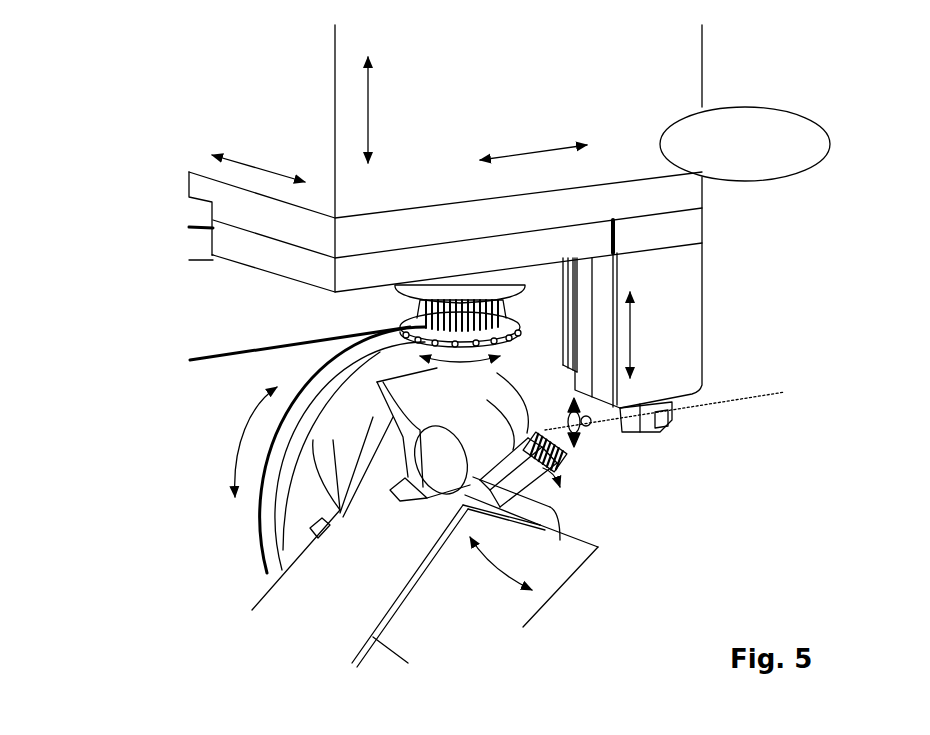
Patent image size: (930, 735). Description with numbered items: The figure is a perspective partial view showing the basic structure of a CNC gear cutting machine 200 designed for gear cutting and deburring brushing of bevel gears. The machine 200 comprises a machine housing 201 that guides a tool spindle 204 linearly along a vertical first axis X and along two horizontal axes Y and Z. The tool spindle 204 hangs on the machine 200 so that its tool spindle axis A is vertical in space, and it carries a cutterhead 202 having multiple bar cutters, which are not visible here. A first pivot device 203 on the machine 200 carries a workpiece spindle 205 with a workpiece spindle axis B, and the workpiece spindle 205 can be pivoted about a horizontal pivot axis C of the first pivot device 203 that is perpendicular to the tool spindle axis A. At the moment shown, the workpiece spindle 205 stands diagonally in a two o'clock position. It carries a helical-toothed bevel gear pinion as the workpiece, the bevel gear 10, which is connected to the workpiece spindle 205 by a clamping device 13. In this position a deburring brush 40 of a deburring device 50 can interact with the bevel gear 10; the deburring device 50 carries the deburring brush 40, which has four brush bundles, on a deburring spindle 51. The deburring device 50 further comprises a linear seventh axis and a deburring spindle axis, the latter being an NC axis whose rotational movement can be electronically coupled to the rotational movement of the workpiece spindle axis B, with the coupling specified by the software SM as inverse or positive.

The CNC gear cutting machine 200 is at (96, 56).
The machine housing 201 is at (651, 61).
The cutterhead 202 is at (415, 343).
The first pivot device 203 is at (312, 473).
The tool spindle 204 is at (525, 297).
The workpiece spindle 205 is at (545, 533).
The bevel gear 10 is at (566, 461).
The clamping device 13 is at (540, 480).
The deburring brush 40 is at (585, 442).
The deburring device 50 is at (682, 410).
The deburring spindle 51 is at (655, 430).